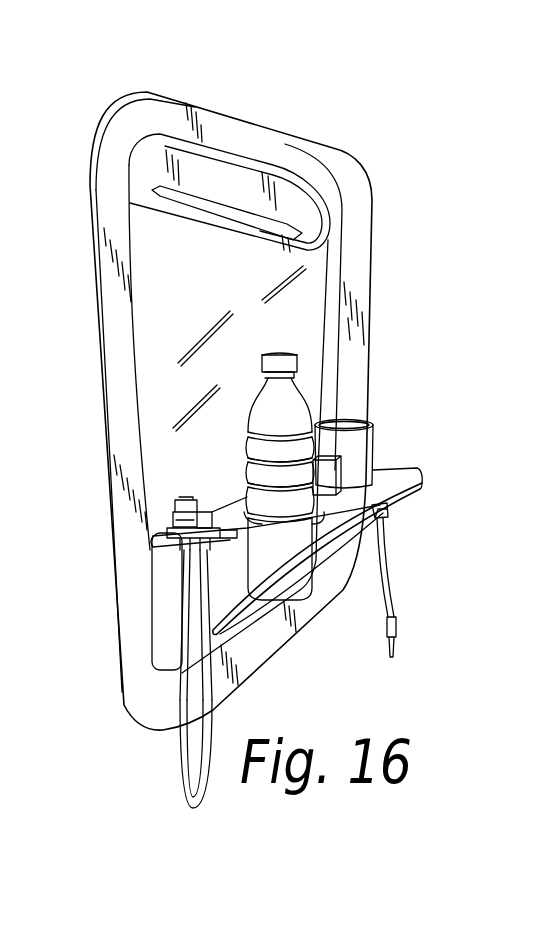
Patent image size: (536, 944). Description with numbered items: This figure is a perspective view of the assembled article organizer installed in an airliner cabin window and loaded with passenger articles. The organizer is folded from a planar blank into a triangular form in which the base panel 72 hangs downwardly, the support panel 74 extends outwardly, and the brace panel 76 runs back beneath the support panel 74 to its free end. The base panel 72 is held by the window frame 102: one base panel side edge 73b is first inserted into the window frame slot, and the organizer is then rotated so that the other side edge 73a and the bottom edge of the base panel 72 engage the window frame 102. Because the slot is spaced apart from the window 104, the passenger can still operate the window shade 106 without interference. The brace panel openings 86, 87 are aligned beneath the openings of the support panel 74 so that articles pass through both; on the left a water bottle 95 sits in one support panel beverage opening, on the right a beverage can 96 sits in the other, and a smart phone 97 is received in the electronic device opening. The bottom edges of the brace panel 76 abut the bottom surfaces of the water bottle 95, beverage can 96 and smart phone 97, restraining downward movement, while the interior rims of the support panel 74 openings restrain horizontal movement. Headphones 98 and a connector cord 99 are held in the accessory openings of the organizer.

The window frame 102 is at (335, 170).
The window 104 is at (196, 297).
The window shade 106 is at (250, 194).
The water bottle 95 is at (293, 428).
The beverage can 96 is at (368, 465).
The smart phone 97 is at (326, 478).
The support panel 74 is at (398, 472).
The brace panel 76 is at (424, 490).
The brace panel opening 86 is at (365, 515).
The brace panel opening 87 is at (380, 520).
The base panel side edge 73b is at (300, 590).
The headphones 98 is at (398, 612).
The base panel 72 is at (180, 589).
The base panel side edge 73a is at (168, 616).
The connector cord 99 is at (183, 693).